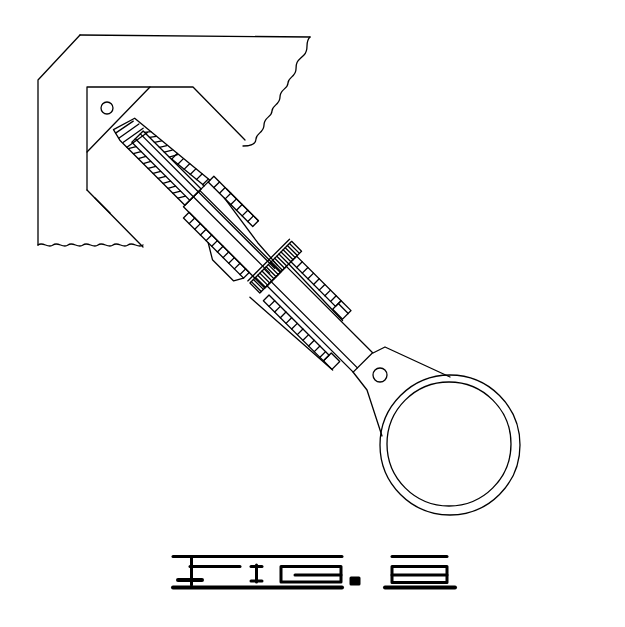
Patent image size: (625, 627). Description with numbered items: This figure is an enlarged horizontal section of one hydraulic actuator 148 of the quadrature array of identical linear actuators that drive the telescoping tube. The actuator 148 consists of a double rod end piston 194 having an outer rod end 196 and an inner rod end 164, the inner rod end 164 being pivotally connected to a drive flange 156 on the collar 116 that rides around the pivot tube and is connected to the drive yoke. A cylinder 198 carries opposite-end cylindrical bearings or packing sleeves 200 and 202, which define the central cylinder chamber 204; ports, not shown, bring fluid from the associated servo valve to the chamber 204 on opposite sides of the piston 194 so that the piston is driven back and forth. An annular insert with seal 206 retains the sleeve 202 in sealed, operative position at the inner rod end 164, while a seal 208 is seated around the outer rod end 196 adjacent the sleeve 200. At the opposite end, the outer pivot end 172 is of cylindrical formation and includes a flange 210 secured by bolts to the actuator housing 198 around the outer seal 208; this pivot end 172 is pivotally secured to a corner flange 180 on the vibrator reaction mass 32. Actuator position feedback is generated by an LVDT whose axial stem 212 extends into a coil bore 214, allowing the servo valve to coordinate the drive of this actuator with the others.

The vibrator reaction mass 32 is at (277, 45).
The corner flange 180 is at (131, 95).
The outer pivot end 172 is at (108, 198).
The axial stem 212 is at (193, 163).
The coil bore 214 is at (153, 135).
The seal 208 is at (228, 180).
The flange 210 is at (183, 222).
The packing sleeve 200 is at (252, 218).
The outer rod end 196 is at (230, 273).
The double rod end piston 194 is at (290, 255).
The actuator 148 is at (283, 233).
The inner rod end 164 is at (362, 348).
The central cylinder chamber 204 is at (305, 267).
The cylinder 198 is at (330, 278).
The packing sleeve 202 is at (345, 303).
The annular insert with seal 206 is at (357, 322).
The drive flange 156 is at (403, 380).
The collar 116 is at (497, 402).